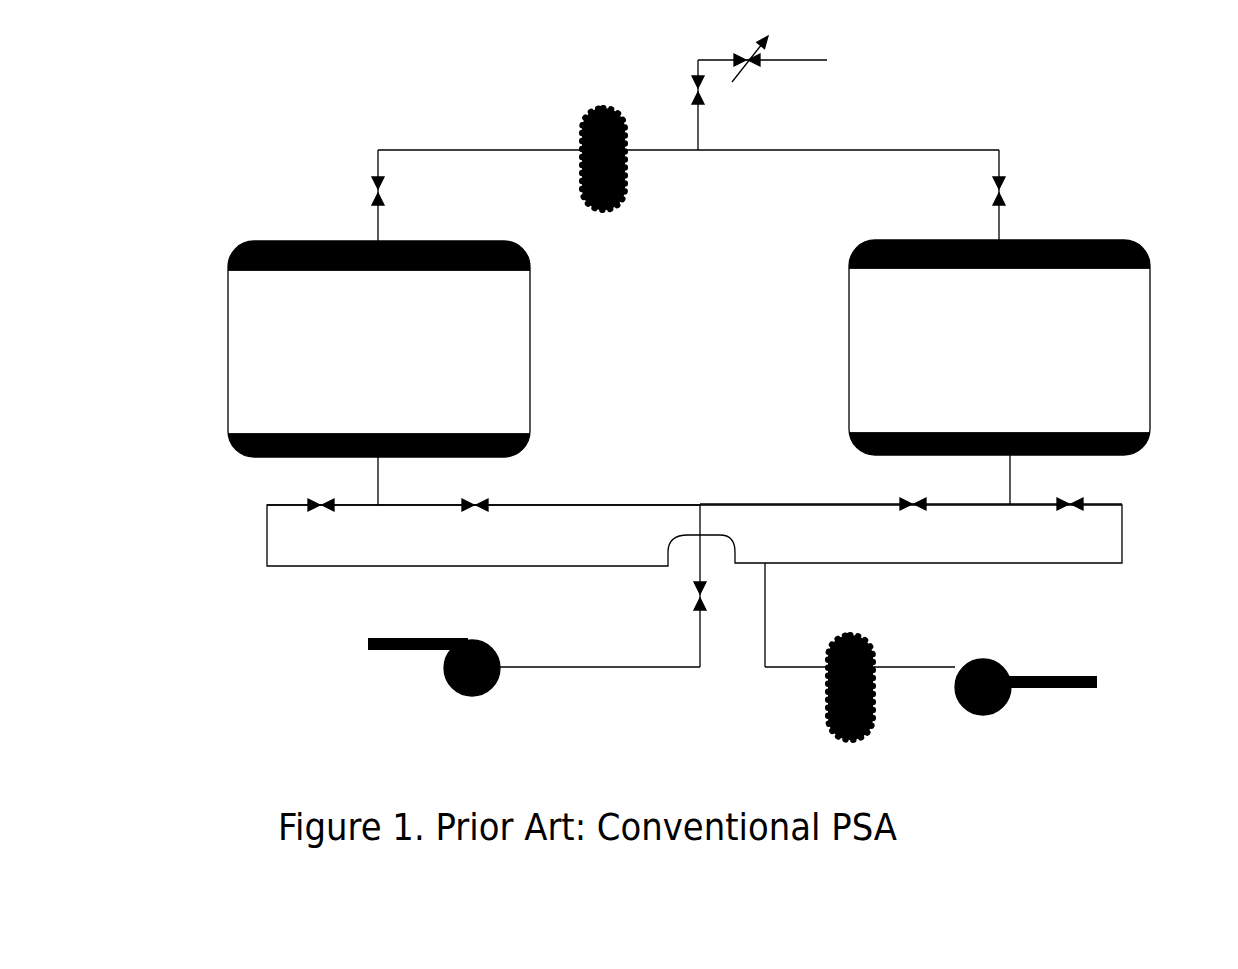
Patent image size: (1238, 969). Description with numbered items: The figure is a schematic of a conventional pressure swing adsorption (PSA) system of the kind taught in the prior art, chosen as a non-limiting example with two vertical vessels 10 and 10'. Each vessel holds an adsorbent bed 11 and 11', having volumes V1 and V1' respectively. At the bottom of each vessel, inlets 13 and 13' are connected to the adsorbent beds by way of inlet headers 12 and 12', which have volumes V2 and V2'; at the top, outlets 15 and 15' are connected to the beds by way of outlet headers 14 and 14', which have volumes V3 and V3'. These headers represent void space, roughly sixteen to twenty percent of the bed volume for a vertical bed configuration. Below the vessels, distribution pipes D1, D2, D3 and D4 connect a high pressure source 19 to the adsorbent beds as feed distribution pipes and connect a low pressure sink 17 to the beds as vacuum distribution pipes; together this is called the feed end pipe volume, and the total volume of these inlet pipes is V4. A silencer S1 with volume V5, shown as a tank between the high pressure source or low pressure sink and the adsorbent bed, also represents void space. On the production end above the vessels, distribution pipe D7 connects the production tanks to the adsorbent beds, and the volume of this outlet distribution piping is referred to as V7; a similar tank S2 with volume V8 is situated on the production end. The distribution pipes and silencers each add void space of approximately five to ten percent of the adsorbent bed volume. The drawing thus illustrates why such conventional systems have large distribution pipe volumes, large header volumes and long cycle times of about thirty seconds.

The vertical vessel 10 is at (969, 339).
The vertical vessel 10' is at (388, 341).
The adsorbent bed 11 is at (942, 347).
The adsorbent bed 11' is at (420, 349).
The volume of adsorbent bed V1 is at (942, 347).
The volume of adsorbent bed V1' is at (420, 349).
The inlet header 12 is at (977, 453).
The inlet header 12' is at (346, 454).
The volume of inlet header V2 is at (977, 453).
The volume of inlet header V2' is at (346, 454).
The inlet 13 is at (1030, 479).
The inlet 13' is at (399, 481).
The outlet header 14 is at (956, 236).
The outlet header 14' is at (351, 238).
The volume of outlet header V3 is at (956, 236).
The volume of outlet header V3' is at (351, 238).
The outlet 15 is at (1028, 195).
The outlet 15' is at (412, 195).
The low pressure sink 17 is at (471, 698).
The high pressure source 19 is at (993, 660).
The distribution pipe D1 is at (790, 669).
The distribution pipe D2 is at (631, 668).
The distribution pipe D3 is at (397, 507).
The distribution pipe D4 is at (1036, 506).
The feed end pipe volume V4 is at (694, 546).
The distribution pipe D7 is at (688, 93).
The volume of production end distribution pipes V7 is at (737, 149).
The silencer S1 is at (887, 680).
The volume of silencer V5 is at (862, 638).
The tank S2 is at (548, 150).
The volume of tank V8 is at (587, 112).